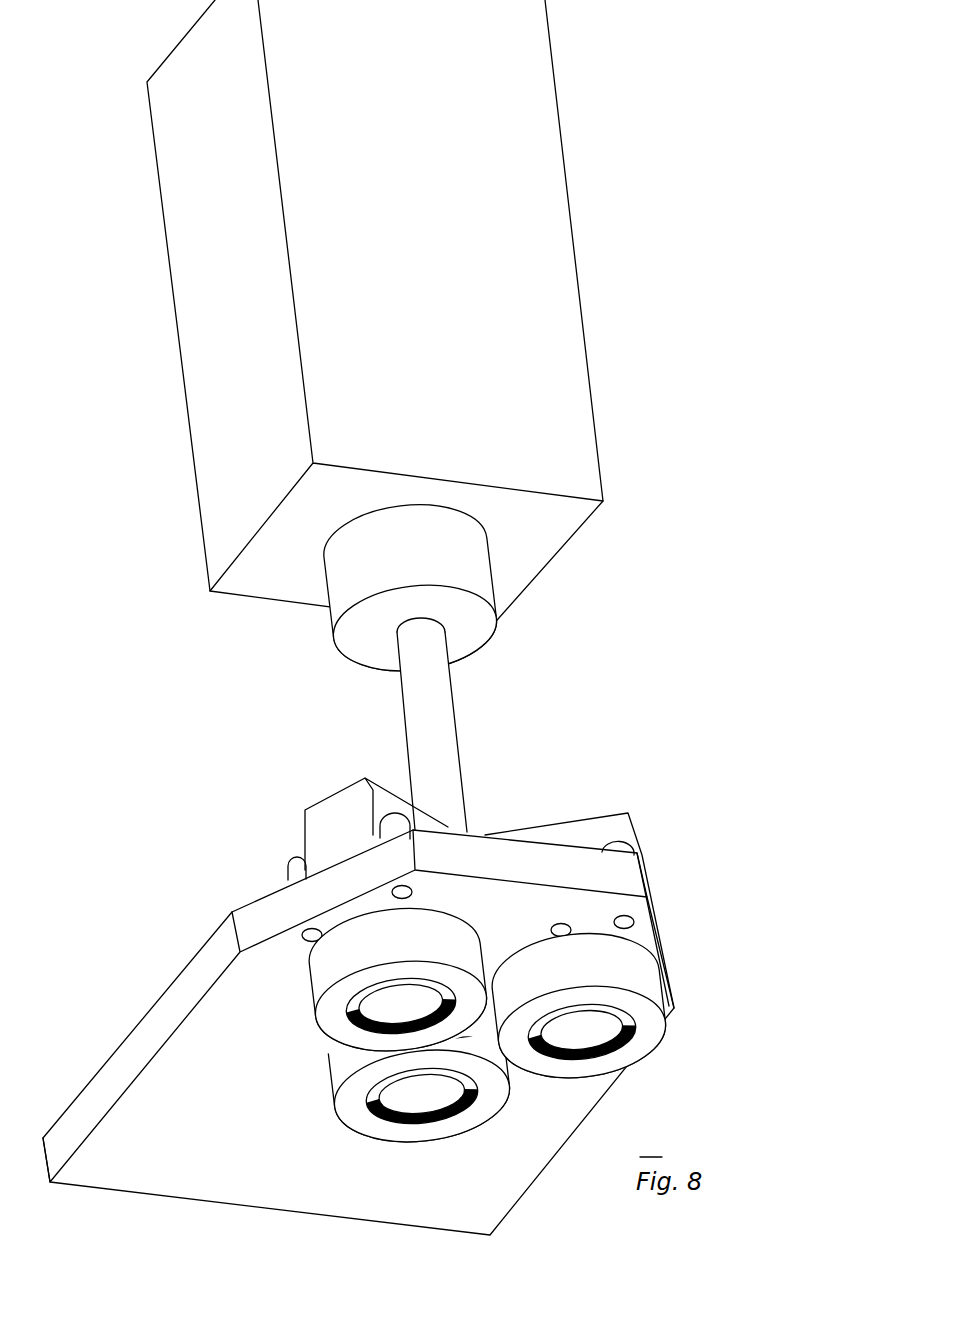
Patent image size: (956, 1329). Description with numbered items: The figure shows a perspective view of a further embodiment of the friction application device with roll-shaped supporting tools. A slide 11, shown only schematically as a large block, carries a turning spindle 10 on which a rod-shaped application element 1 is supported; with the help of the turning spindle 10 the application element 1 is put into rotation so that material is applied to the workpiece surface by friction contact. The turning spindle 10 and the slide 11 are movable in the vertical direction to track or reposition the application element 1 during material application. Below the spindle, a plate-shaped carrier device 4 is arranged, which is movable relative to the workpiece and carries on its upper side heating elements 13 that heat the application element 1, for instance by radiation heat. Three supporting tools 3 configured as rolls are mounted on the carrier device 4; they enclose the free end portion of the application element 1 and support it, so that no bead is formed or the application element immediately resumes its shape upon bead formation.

The application element 1 is at (438, 725).
The supporting tools 3 is at (427, 943).
The carrier device 4 is at (193, 983).
The turning spindle 10 is at (360, 577).
The slide 11 is at (553, 267).
The heating elements 13 is at (332, 818).